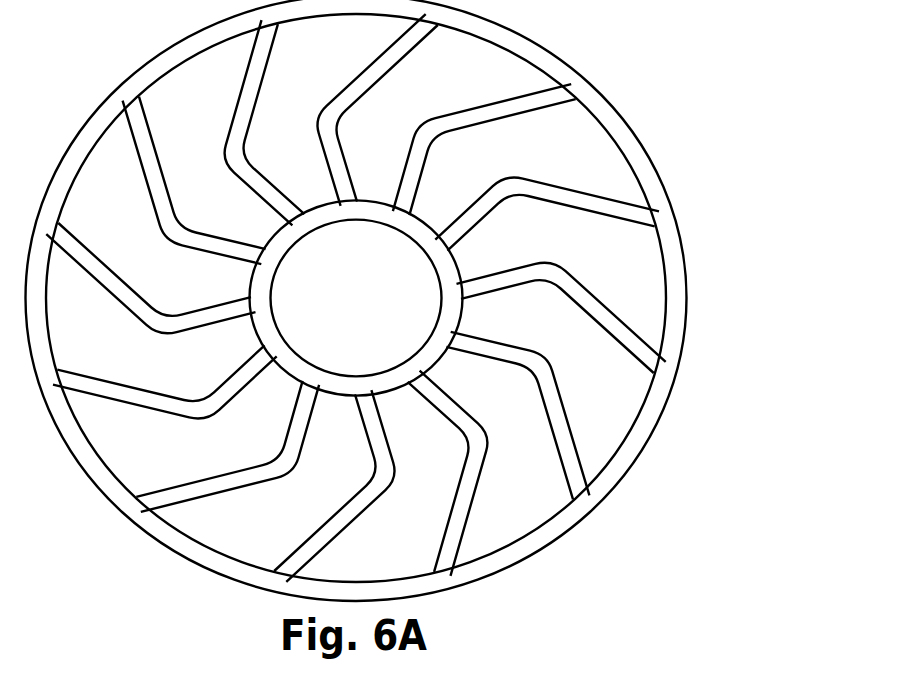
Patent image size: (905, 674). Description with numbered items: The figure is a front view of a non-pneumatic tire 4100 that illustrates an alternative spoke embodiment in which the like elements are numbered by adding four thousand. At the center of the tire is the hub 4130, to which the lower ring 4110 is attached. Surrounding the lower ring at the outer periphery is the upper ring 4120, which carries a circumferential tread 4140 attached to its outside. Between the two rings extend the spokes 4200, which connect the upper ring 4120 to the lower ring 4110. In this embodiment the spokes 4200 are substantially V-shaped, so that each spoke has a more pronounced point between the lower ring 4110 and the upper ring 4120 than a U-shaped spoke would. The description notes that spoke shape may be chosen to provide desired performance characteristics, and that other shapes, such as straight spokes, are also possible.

The non-pneumatic tire 4100 is at (597, 40).
The circumferential tread 4140 is at (620, 135).
The upper ring 4120 is at (638, 180).
The lower ring 4110 is at (237, 342).
The hub 4130 is at (335, 383).
The spokes 4200 is at (360, 83).